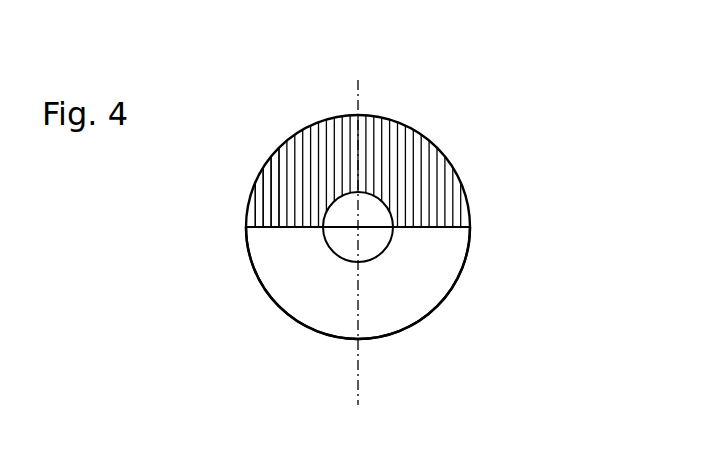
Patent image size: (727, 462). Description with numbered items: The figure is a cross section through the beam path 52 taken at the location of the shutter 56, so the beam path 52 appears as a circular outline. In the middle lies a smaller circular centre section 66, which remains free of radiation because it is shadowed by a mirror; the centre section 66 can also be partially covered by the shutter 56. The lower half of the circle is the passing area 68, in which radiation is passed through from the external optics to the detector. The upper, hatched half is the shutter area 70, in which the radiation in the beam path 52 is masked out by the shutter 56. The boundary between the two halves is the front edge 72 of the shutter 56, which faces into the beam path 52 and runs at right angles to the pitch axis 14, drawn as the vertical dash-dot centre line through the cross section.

The pitch axis 14 is at (360, 363).
The beam path 52 is at (468, 258).
The shutter 56 is at (443, 185).
The centre section 66 is at (345, 242).
The passing area 68 is at (410, 302).
The shutter area 70 is at (267, 210).
The front edge 72 is at (280, 230).